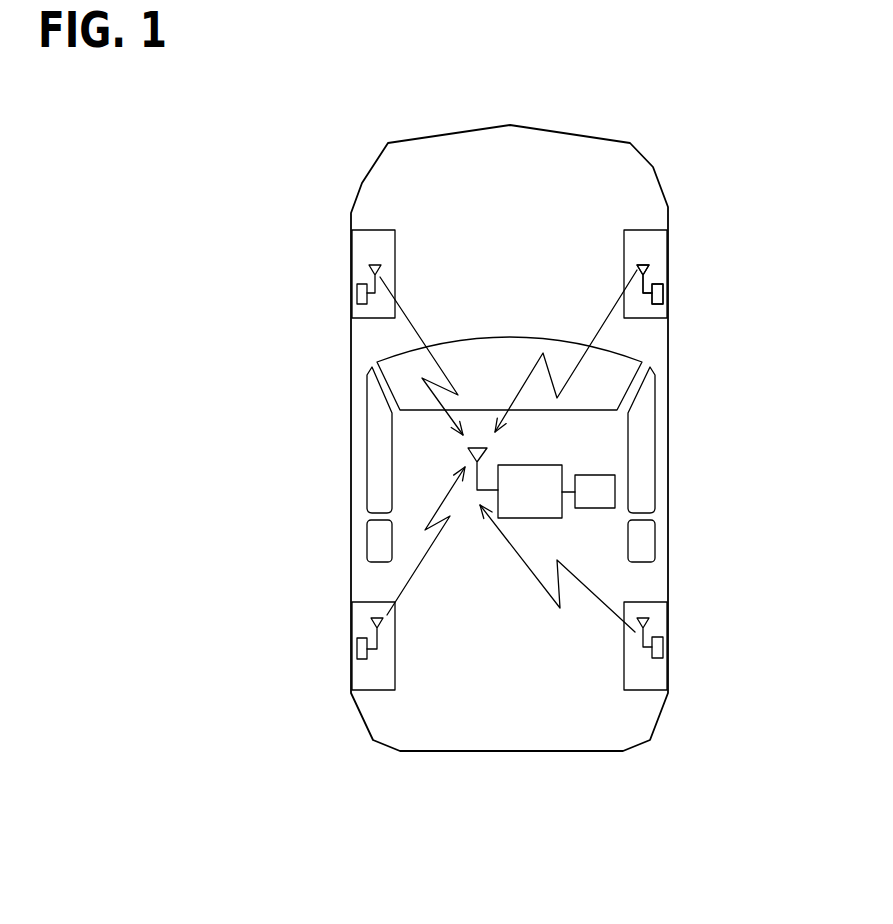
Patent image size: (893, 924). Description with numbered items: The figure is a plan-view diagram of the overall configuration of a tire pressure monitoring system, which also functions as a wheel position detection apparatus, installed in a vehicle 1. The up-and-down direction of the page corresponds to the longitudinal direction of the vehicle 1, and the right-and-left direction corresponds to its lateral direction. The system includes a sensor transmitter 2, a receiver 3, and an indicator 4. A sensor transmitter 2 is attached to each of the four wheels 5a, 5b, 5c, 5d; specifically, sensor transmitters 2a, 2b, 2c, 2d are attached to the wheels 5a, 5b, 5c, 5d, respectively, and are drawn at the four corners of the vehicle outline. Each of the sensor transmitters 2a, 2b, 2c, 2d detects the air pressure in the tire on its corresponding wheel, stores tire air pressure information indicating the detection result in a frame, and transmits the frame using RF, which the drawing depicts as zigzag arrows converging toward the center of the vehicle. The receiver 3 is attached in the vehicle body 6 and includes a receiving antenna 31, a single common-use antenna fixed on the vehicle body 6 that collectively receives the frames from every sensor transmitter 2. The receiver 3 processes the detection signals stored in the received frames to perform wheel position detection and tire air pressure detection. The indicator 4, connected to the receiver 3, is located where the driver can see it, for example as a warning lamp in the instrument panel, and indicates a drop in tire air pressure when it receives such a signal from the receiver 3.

The vehicle 1 is at (604, 136).
The sensor transmitter 2 is at (657, 281).
The sensor transmitter 2a is at (663, 290).
The sensor transmitter 2b is at (357, 292).
The sensor transmitter 2c is at (663, 646).
The sensor transmitter 2d is at (357, 648).
The receiver 3 is at (543, 464).
The receiving antenna 31 is at (488, 455).
The indicator 4 is at (595, 509).
The wheel 5a is at (641, 230).
The wheel 5b is at (375, 230).
The wheel 5c is at (641, 688).
The wheel 5d is at (383, 690).
The vehicle body 6 is at (669, 368).